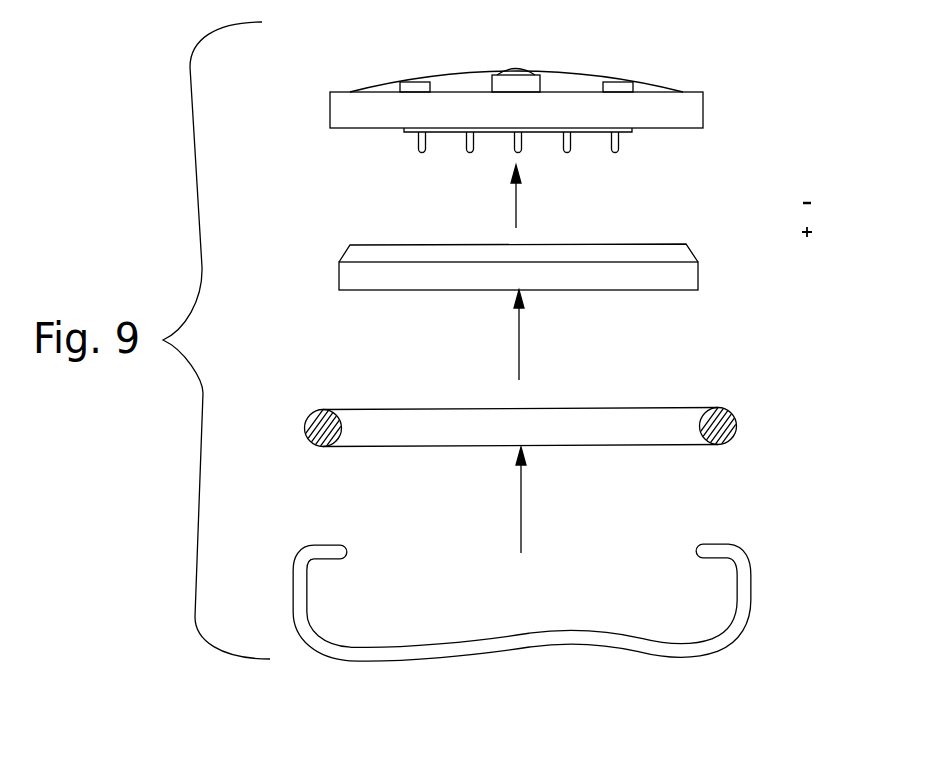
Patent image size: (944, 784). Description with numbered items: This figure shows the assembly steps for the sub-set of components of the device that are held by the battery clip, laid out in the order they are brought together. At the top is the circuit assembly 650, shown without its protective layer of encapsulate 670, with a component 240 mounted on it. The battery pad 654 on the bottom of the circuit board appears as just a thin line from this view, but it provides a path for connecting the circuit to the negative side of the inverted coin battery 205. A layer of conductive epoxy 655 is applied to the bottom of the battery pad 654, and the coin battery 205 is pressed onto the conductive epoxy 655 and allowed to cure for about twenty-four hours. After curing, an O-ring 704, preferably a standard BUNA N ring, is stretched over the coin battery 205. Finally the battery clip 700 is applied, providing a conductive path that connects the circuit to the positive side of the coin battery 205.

The component on circuit board 240 is at (520, 68).
The encapsulate 670 is at (647, 75).
The circuit assembly 650 is at (703, 106).
The battery pad 654 is at (632, 131).
The conductive epoxy 655 is at (410, 140).
The coin battery 205 is at (692, 270).
The O-ring 704 is at (737, 425).
The battery clip 700 is at (752, 578).